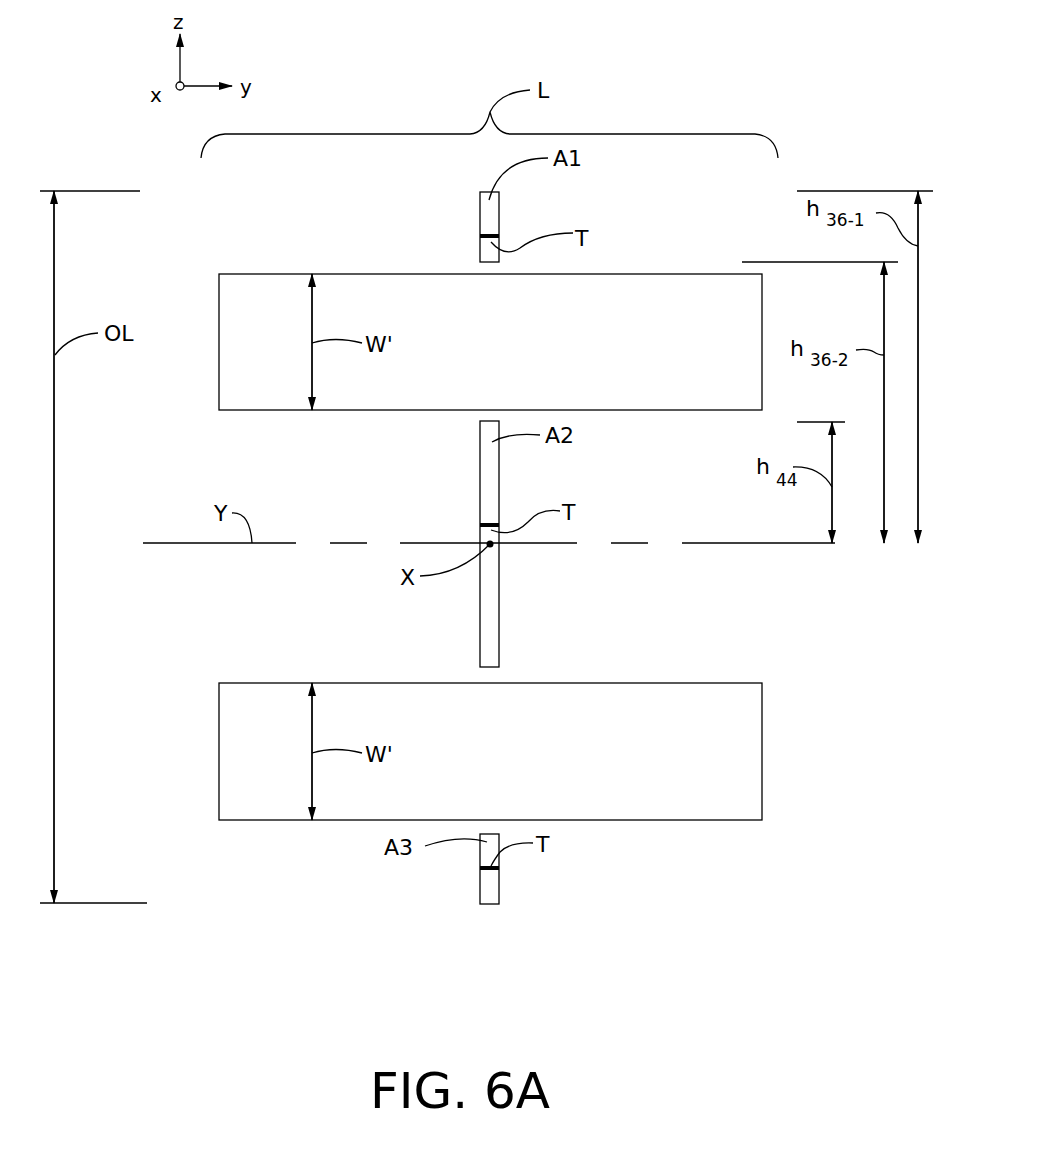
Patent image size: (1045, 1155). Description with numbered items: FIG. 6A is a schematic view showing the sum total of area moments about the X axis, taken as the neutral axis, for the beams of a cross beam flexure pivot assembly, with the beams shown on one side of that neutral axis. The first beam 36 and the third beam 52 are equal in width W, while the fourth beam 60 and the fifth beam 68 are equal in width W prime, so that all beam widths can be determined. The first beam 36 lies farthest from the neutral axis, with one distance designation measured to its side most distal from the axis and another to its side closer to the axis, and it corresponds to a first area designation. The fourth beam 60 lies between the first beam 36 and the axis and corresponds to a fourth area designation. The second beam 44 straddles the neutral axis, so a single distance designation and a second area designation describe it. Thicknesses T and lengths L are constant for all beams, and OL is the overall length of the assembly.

The first beam 36 is at (500, 208).
The second beam 44 is at (500, 481).
The third beam 52 is at (500, 890).
The fourth beam 60 is at (703, 272).
The fifth beam 68 is at (672, 682).